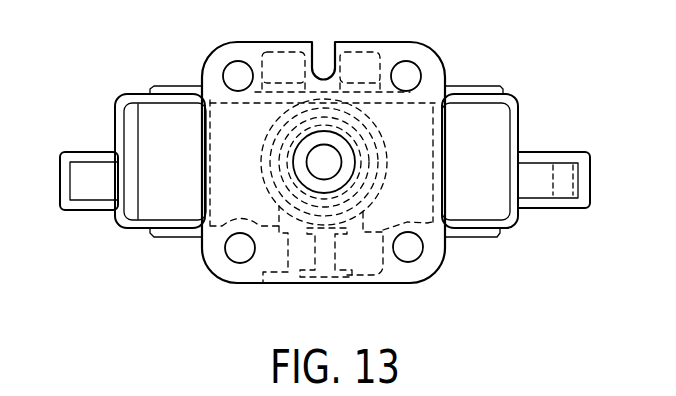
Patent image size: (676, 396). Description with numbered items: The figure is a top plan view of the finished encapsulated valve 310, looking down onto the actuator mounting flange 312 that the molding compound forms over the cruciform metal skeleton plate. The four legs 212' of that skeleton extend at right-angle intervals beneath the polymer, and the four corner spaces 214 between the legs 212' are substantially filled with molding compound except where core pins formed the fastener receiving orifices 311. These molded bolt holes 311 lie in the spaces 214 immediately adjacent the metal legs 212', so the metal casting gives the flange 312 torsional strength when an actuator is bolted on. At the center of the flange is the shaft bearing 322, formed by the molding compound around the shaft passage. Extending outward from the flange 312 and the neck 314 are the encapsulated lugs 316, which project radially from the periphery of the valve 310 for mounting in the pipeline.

The valve 310 is at (452, 53).
The fastener receiving orifices 311 is at (238, 62).
The actuator mounting flange 312 is at (422, 112).
The neck 314 is at (338, 120).
The lugs 316 is at (575, 208).
The shaft bearing 322 is at (297, 163).
The corner spaces 214 is at (256, 273).
The legs of the mounting plate skeleton 212' is at (325, 280).